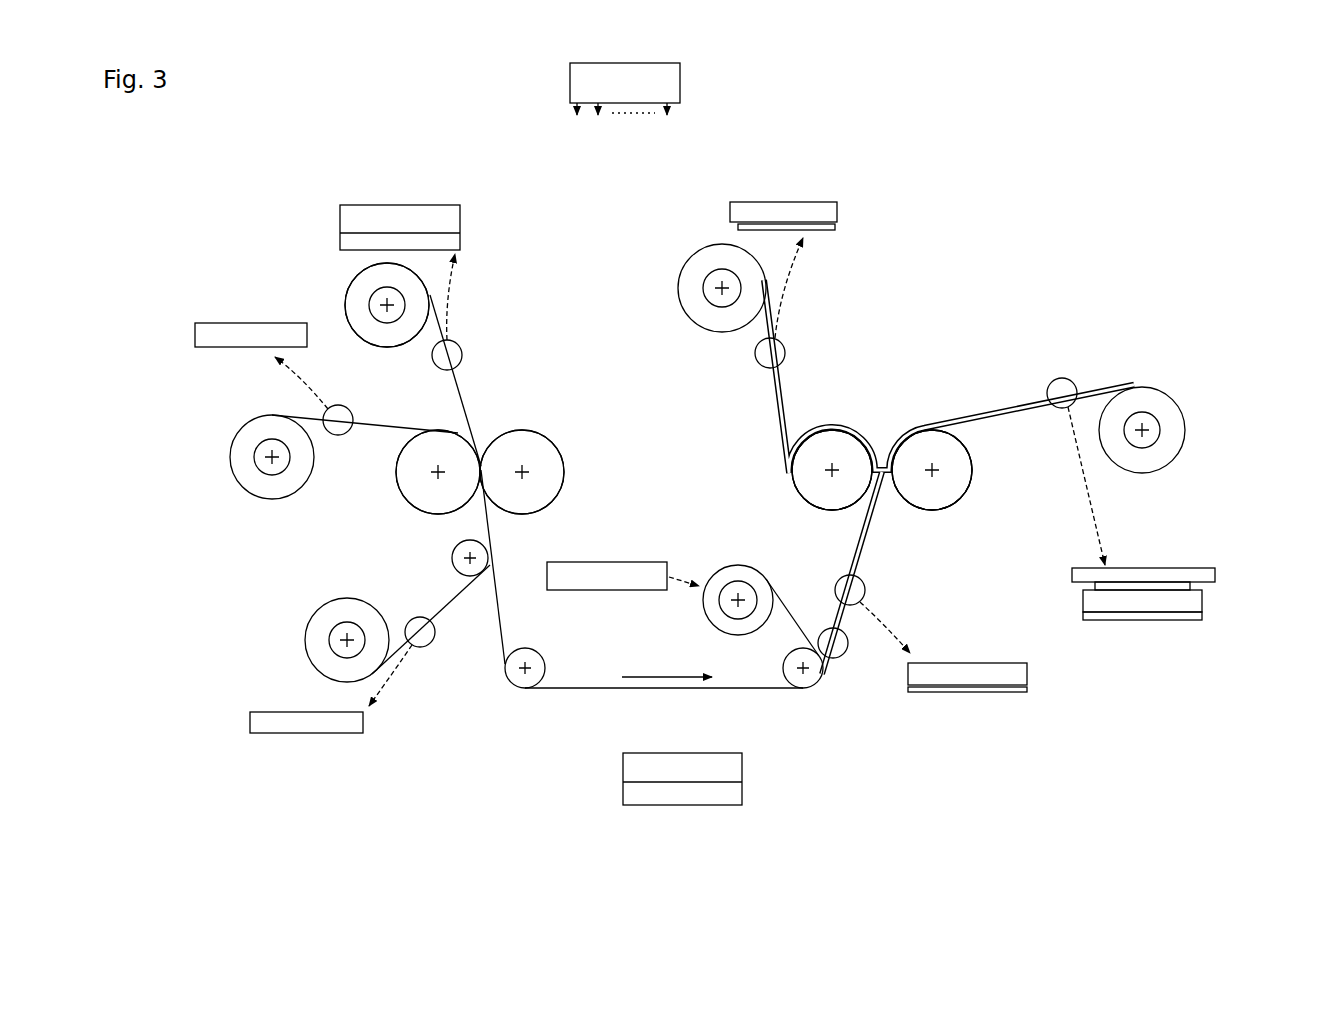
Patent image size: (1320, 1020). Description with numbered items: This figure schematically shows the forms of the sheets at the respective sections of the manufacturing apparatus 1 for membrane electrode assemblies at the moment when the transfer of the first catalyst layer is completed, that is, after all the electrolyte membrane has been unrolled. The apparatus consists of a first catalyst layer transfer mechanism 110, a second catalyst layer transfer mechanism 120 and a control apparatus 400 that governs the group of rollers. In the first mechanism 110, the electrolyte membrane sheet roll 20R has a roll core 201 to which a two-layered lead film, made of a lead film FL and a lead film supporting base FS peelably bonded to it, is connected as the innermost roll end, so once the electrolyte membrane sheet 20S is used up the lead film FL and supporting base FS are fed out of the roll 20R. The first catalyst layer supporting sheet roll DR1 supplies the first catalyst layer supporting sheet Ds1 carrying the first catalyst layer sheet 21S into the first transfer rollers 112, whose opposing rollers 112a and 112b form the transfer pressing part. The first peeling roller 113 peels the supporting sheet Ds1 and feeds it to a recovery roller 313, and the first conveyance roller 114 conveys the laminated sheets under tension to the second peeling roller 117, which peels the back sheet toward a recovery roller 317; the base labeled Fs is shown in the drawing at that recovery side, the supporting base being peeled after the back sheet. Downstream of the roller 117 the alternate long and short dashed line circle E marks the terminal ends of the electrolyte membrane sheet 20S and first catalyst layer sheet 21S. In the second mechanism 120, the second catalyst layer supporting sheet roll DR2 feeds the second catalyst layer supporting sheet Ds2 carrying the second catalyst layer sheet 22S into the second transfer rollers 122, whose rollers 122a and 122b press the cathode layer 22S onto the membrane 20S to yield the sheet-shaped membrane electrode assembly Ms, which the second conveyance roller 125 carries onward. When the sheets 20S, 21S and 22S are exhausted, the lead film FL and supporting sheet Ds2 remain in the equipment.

The manufacturing apparatus 1 is at (492, 148).
The control apparatus 400 is at (685, 83).
The lead film supporting base FS is at (365, 215).
The lead film FL is at (360, 243).
The roll core 201 is at (367, 305).
The electrolyte membrane sheet roll 20R is at (387, 353).
The first catalyst layer supporting sheet Ds1 is at (193, 333).
The first catalyst layer transfer mechanism 110 is at (473, 367).
The first transfer rollers 112 is at (595, 368).
The roller 112a is at (538, 442).
The roller 112b is at (448, 447).
The first catalyst layer supporting sheet roll DR1 is at (255, 493).
The first peeling roller 113 is at (451, 562).
The recovery roller 313 is at (307, 625).
The first conveyance roller 114 is at (532, 660).
The film sensor Fs is at (613, 560).
The recovery roller 317 is at (712, 628).
The second peeling roller 117 is at (805, 688).
The alternate long and short dashed line circle E is at (848, 660).
The second catalyst layer supporting sheet roll DR2 is at (697, 253).
The second catalyst layer supporting sheet Ds2 is at (840, 213).
The second catalyst layer sheet 22S is at (838, 227).
The second catalyst layer transfer mechanism 120 is at (876, 403).
The second transfer rollers 122 is at (985, 585).
The roller 122a is at (822, 505).
The roller 122b is at (930, 508).
The sheet-shaped membrane electrode assembly Ms is at (1010, 387).
The second conveyance roller 125 is at (1167, 387).
The electrolyte membrane sheet 20S is at (1027, 672).
The first catalyst layer sheet 21S is at (1027, 690).